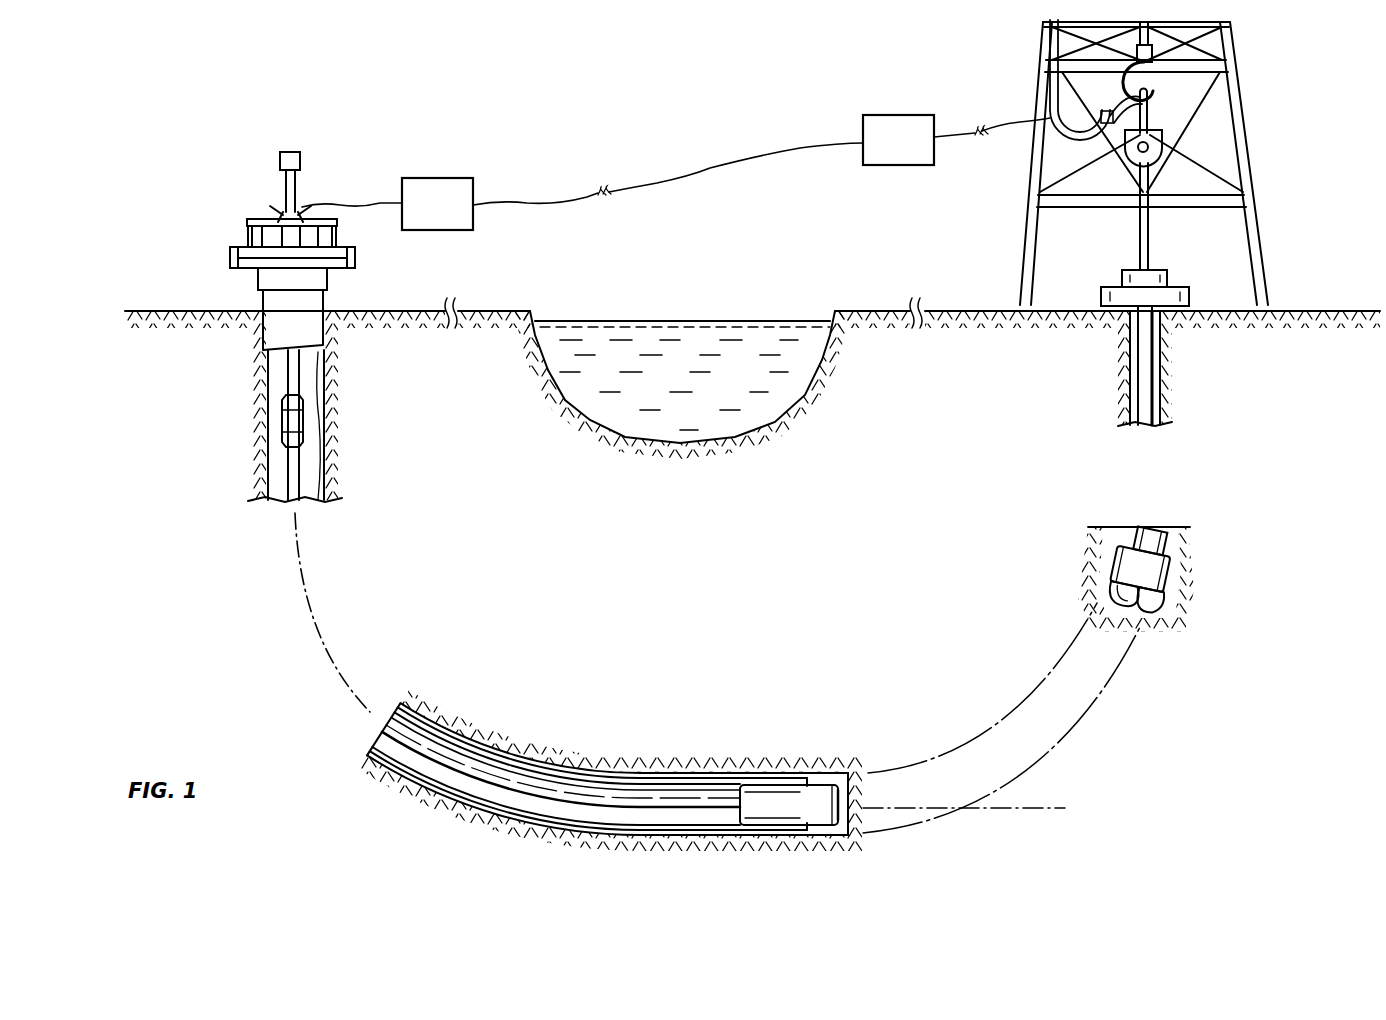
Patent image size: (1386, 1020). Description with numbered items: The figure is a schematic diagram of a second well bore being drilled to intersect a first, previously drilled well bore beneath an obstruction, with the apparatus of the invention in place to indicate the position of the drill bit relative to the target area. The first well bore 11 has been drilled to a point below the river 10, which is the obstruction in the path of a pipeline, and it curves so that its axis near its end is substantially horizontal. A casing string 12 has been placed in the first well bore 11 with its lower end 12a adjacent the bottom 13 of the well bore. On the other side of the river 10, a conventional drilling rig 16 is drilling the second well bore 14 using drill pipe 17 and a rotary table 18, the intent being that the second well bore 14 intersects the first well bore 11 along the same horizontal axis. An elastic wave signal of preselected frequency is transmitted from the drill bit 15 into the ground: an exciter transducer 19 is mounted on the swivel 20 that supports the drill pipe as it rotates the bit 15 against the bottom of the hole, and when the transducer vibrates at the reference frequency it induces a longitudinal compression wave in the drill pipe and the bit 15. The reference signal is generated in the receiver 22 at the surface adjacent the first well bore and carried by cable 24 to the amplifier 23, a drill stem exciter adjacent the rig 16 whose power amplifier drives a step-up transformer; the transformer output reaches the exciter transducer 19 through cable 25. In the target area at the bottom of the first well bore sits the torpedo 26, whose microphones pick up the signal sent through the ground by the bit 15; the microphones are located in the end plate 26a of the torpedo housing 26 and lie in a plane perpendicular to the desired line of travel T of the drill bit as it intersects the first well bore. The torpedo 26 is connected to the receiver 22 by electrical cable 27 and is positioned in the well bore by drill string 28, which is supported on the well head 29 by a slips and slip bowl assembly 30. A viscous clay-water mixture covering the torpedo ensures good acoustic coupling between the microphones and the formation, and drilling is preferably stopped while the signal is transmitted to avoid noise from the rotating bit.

The river 10 is at (703, 304).
The first well bore 11 is at (493, 805).
The casing string 12 is at (325, 468).
The lower end of casing string 12a is at (806, 781).
The bottom of the well bore 13 is at (840, 836).
The second well bore 14 is at (1170, 553).
The drill bit 15 is at (1172, 590).
The drilling rig 16 is at (1262, 205).
The drill pipe 17 is at (1150, 382).
The rotary table 18 is at (1178, 285).
The exciter transducer 19 is at (1113, 103).
The swivel 20 is at (1157, 158).
The receiver 22 is at (437, 204).
The amplifier 23 is at (898, 140).
The cable 24 is at (778, 149).
The cable 25 is at (1083, 113).
The torpedo 26 is at (768, 795).
The end plate 26a is at (845, 810).
The electrical cable 27 is at (358, 204).
The drill string 28 is at (503, 775).
The well head 29 is at (231, 258).
The slips and slip bowl assembly 30 is at (246, 214).
The desired line of travel T is at (1003, 808).